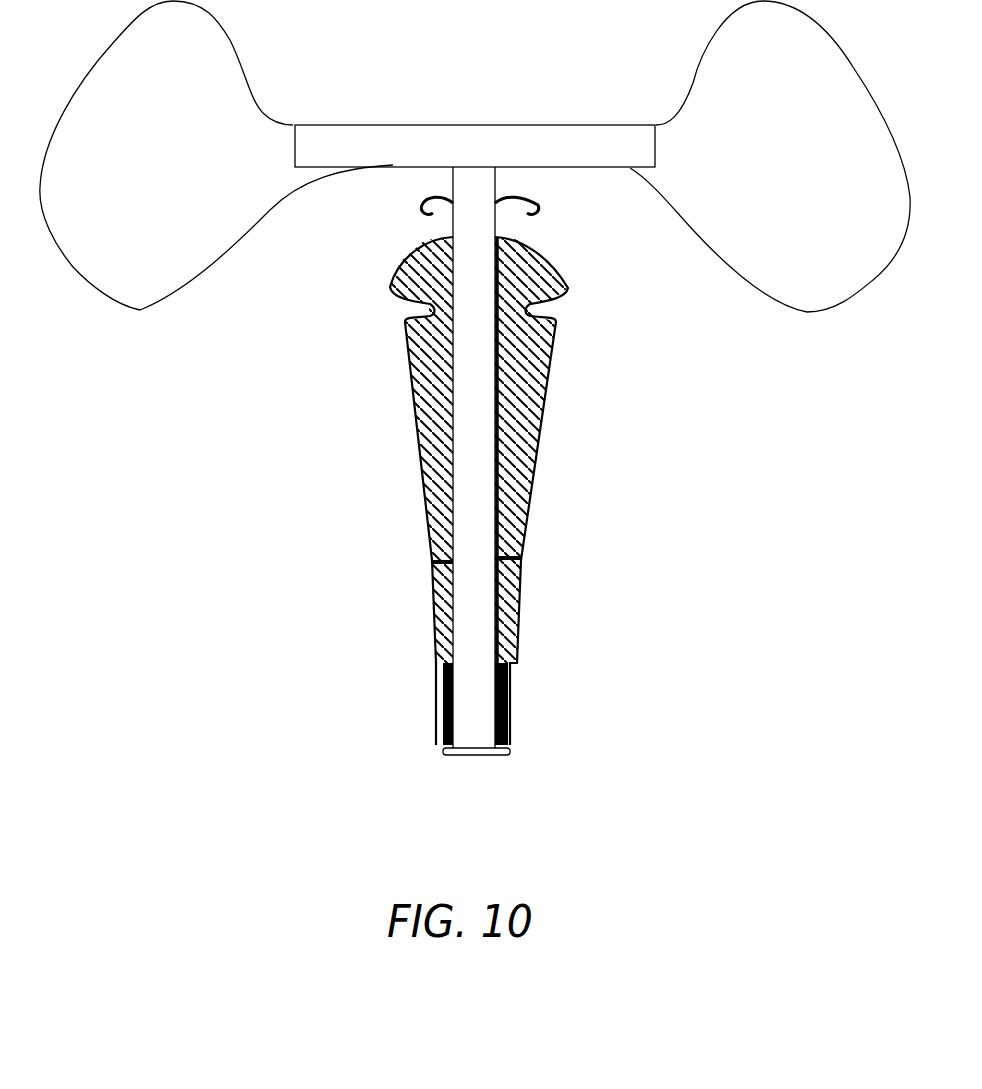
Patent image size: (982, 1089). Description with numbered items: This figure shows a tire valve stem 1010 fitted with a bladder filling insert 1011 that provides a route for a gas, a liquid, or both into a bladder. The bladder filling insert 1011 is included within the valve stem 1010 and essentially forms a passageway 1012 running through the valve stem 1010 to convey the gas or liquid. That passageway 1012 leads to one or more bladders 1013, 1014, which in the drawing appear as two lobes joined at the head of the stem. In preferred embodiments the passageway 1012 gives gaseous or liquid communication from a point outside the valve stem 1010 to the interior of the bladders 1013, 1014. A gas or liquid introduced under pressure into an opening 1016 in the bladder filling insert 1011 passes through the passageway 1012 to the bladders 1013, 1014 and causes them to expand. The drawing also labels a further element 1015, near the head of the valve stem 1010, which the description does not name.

The anchor body 1010 is at (492, 491).
The central shaft / lumen 1011 is at (453, 426).
The connector bar 1012 is at (475, 146).
The left lobe / balloon 1013 is at (216, 155).
The right lobe / balloon 1014 is at (770, 156).
The clip arms 1015 is at (497, 187).
The base plate 1016 is at (478, 762).